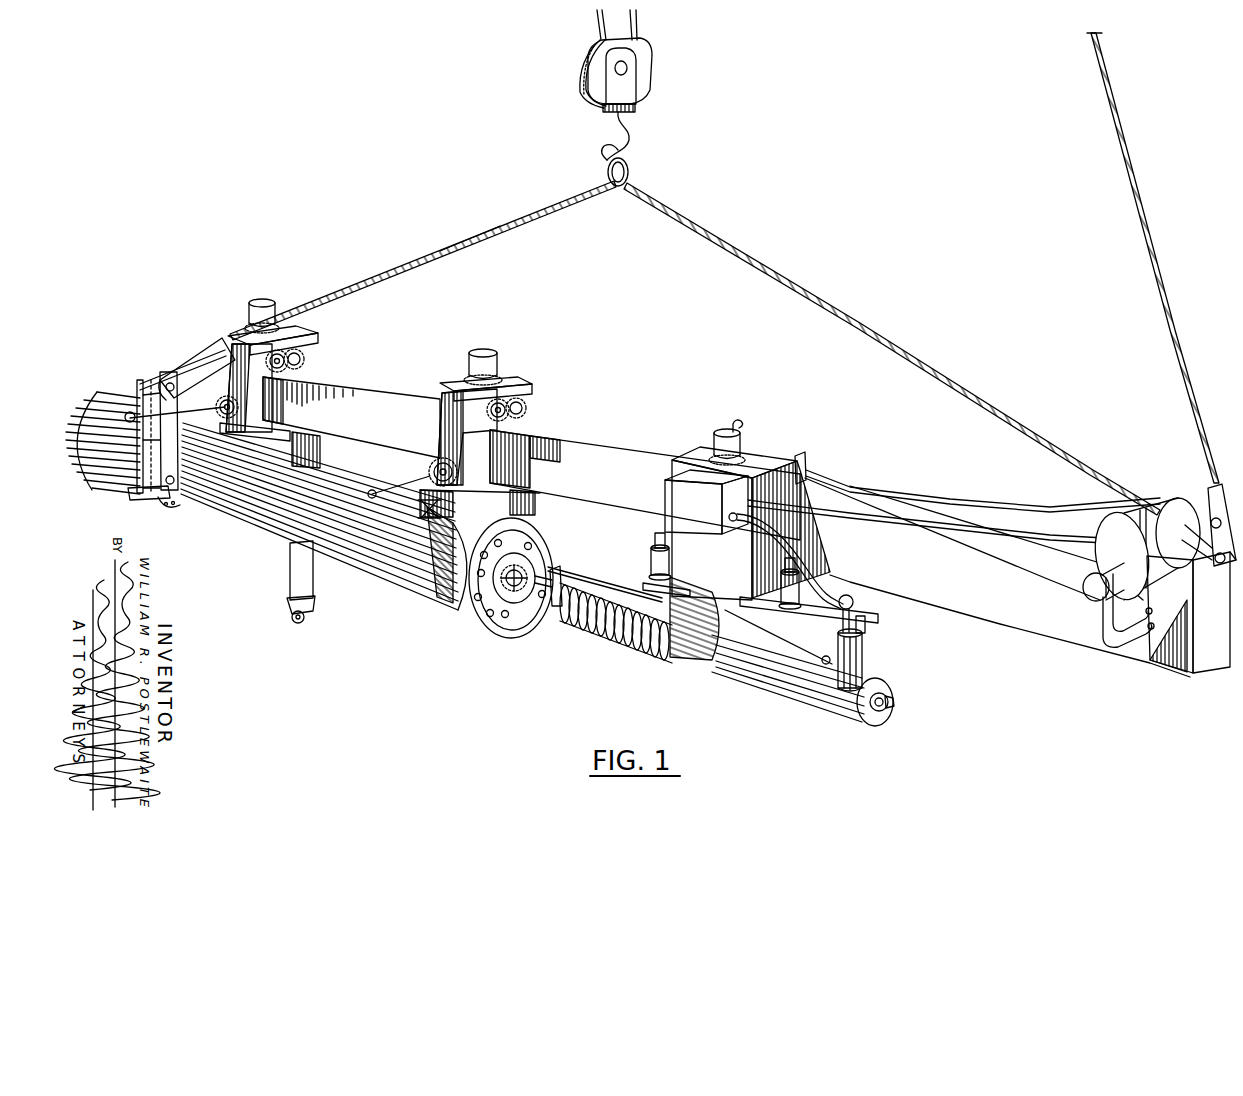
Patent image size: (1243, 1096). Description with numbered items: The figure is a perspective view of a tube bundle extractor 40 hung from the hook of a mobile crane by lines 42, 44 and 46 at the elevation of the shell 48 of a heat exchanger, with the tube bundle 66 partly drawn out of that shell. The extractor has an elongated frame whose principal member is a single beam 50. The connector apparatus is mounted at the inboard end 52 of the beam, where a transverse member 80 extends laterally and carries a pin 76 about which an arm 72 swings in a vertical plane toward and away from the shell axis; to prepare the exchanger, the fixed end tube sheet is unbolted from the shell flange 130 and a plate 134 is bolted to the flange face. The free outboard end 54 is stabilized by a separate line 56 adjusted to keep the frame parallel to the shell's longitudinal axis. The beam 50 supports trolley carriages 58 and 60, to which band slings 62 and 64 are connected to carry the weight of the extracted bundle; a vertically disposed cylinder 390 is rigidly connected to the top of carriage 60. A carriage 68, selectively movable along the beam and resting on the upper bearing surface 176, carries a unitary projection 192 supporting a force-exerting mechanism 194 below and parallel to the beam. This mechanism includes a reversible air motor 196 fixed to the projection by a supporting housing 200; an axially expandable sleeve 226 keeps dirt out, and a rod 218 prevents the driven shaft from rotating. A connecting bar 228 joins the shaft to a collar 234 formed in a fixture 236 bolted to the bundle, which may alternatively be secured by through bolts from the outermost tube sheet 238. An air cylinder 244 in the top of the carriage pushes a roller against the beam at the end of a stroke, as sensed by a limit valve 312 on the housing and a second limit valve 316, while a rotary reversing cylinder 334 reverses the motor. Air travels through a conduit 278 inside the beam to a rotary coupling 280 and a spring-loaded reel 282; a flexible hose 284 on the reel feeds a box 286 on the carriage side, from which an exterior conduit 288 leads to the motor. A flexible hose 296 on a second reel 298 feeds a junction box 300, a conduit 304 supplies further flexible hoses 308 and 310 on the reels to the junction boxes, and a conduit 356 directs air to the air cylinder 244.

The tube bundle extractor 40 is at (580, 430).
The line 42 is at (763, 256).
The line 44 is at (416, 250).
The line 46 is at (470, 262).
The shell 48 is at (110, 392).
The beam 50 is at (590, 482).
The inboard end 52 is at (218, 352).
The outboard end 54 is at (1178, 671).
The line 56 is at (1126, 153).
The trolley carriage 58 is at (293, 331).
The trolley carriage 60 is at (514, 379).
The band sling 62 is at (289, 571).
The band sling 64 is at (434, 568).
The tube bundle 66 is at (349, 574).
The carriage 68 is at (688, 450).
The arm 72 is at (174, 455).
The pin 76 is at (160, 387).
The transverse member 80 is at (168, 362).
The shell flange 130 is at (171, 509).
The plate 134 is at (142, 494).
The upper bearing surface 176 is at (372, 393).
The projection 192 is at (689, 662).
The force-exerting mechanism 194 is at (870, 733).
The reversible air motor 196 is at (866, 661).
The supporting housing 200 is at (778, 699).
The rod 218 is at (594, 560).
The axially expandable sleeve 226 is at (609, 636).
The connecting bar 228 is at (539, 597).
The collar 234 is at (512, 604).
The fixture 236 is at (490, 600).
The outermost tube sheet 238 is at (527, 542).
The air cylinder 244 is at (744, 434).
The conduit 278 is at (1145, 611).
The rotary coupling 280 is at (1090, 588).
The reel 282 is at (1118, 540).
The flexible hose 284 is at (974, 536).
The box 286 is at (666, 496).
The exterior conduit 288 is at (804, 570).
The flexible hose 296 is at (1005, 505).
The reel 298 is at (1176, 501).
The junction box 300 is at (808, 471).
The conduit 304 is at (1098, 633).
The flexible hose 308 is at (1010, 524).
The flexible hose 310 is at (952, 508).
The limit valve 312 is at (826, 661).
The second limit valve 316 is at (645, 590).
The reversing cylinder 334 is at (870, 634).
The conduit 356 is at (738, 421).
The cylinder 390 is at (466, 359).